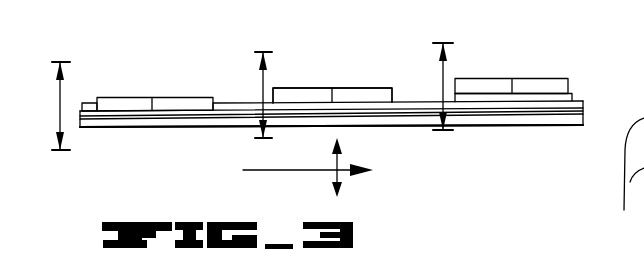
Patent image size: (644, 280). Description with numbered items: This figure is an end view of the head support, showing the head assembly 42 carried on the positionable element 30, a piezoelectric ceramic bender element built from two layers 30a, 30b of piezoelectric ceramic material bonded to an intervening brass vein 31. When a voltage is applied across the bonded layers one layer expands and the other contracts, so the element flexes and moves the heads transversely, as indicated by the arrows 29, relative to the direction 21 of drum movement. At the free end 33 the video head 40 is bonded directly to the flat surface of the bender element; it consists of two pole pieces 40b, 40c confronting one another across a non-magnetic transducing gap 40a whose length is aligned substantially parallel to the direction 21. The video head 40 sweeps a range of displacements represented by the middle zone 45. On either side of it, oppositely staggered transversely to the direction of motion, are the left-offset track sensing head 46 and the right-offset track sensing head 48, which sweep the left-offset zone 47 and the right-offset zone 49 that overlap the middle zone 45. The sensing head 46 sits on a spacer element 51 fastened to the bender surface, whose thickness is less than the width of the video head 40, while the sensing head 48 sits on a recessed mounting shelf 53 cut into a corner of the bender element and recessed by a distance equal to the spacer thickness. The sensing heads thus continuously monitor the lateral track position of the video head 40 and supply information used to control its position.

The direction of drum movement 21 is at (274, 170).
The arrows indicating transverse tracking movement 29 is at (334, 172).
The positionable element 30 is at (493, 133).
The piezoelectric ceramic layer 30a is at (584, 106).
The piezoelectric ceramic layer 30b is at (525, 126).
The brass vein 31 is at (553, 116).
The free end 33 is at (187, 128).
The video head 40 is at (331, 76).
The non-magnetic transducing gap 40a is at (333, 103).
The pole piece 40b is at (292, 87).
The pole piece 40c is at (375, 87).
The head assembly 42 is at (82, 166).
The middle zone 45 is at (263, 82).
The left-offset track sensing head 46 is at (538, 70).
The left-offset zone 47 is at (443, 84).
The right-offset track sensing head 48 is at (127, 88).
The right-offset zone 49 is at (60, 103).
The spacer element 51 is at (571, 93).
The recessed mounting shelf 53 is at (86, 103).